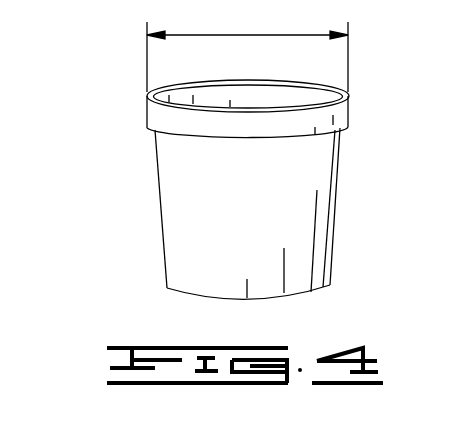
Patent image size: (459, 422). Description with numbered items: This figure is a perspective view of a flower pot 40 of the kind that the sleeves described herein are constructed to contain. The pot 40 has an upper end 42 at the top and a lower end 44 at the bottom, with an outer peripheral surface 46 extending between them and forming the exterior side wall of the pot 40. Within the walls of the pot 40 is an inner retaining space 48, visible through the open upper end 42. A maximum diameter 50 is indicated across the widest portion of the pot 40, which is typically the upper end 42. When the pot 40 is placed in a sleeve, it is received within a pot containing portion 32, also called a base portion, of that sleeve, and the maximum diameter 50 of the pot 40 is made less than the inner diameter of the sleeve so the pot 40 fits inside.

The pot 40 is at (224, 178).
The upper end 42 is at (324, 84).
The lower end 44 is at (222, 300).
The outer peripheral surface 46 is at (158, 182).
The inner retaining space 48 is at (205, 97).
The maximum diameter 50 is at (250, 31).
The pot containing portion 32 is at (450, 213).